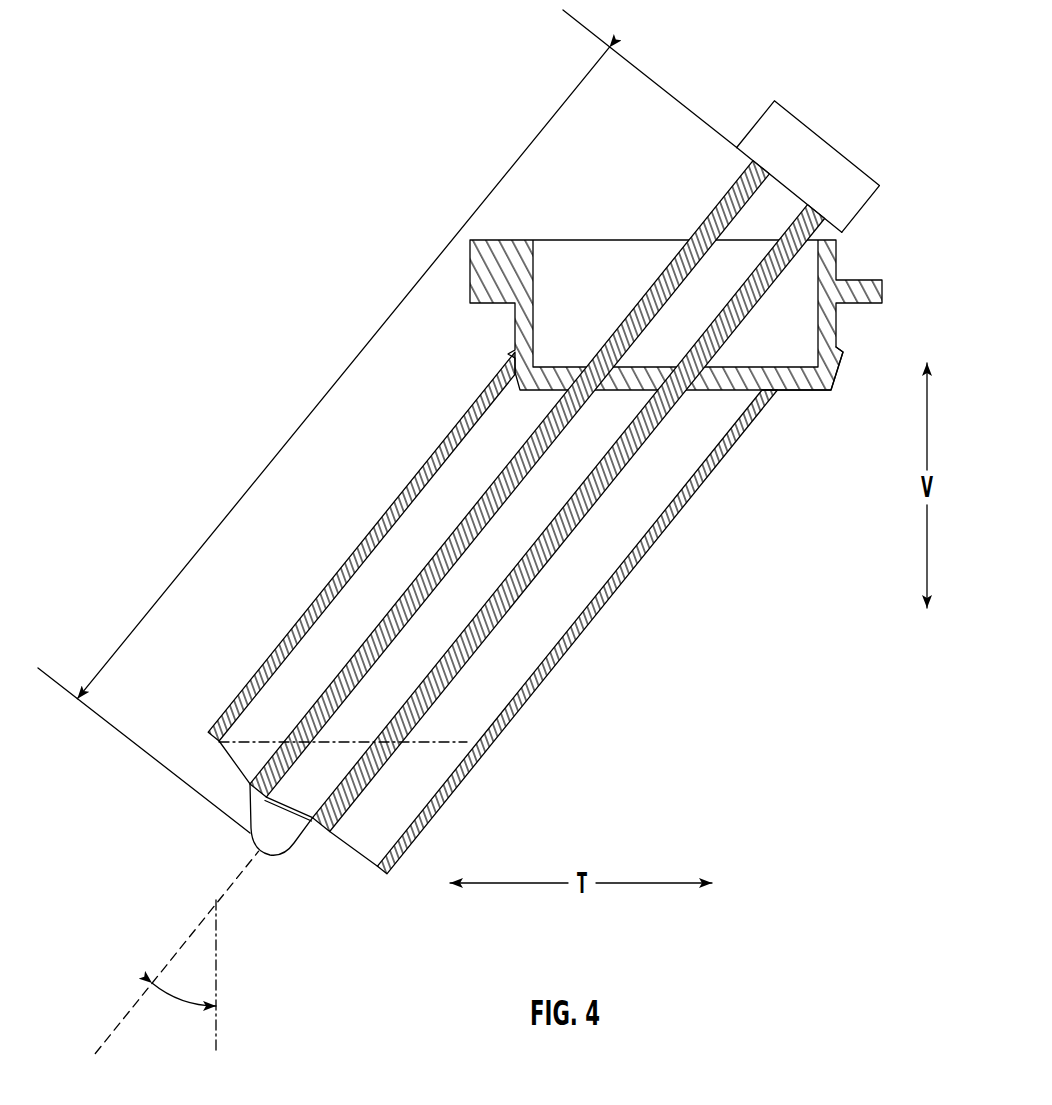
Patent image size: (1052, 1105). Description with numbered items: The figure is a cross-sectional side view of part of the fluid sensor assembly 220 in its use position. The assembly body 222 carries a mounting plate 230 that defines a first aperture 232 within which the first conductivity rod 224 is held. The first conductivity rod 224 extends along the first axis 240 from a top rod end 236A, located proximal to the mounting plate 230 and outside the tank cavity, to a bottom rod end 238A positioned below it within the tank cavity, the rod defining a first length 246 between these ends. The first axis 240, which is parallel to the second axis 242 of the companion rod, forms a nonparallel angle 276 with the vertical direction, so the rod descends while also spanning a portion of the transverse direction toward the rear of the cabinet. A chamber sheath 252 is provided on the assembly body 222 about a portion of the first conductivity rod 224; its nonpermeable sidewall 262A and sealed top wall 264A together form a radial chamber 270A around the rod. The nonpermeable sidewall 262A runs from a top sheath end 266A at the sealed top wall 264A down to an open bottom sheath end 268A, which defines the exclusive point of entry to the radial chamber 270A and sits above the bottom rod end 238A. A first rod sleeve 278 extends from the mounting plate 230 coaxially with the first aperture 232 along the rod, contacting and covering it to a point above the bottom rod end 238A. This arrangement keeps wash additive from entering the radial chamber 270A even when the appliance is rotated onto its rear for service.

The fluid sensor assembly 220 is at (759, 121).
The assembly body 222 is at (680, 329).
The first conductivity rod 224 is at (227, 835).
The mounting plate 230 is at (832, 392).
The first aperture 232 is at (579, 518).
The top rod end 236A is at (778, 198).
The bottom rod end 238A is at (252, 842).
The first axis 240 is at (148, 952).
The second axis 242 is at (122, 1013).
The first length 246 is at (296, 431).
The chamber sheath 252 is at (499, 613).
The nonpermeable sidewall 262A is at (584, 632).
The sealed top wall 264A is at (746, 399).
The top sheath end 266A is at (762, 403).
The bottom sheath end 268A is at (234, 768).
The radial chamber 270A is at (502, 678).
The nonparallel angle 276 is at (175, 1007).
The first rod sleeve 278 is at (547, 496).